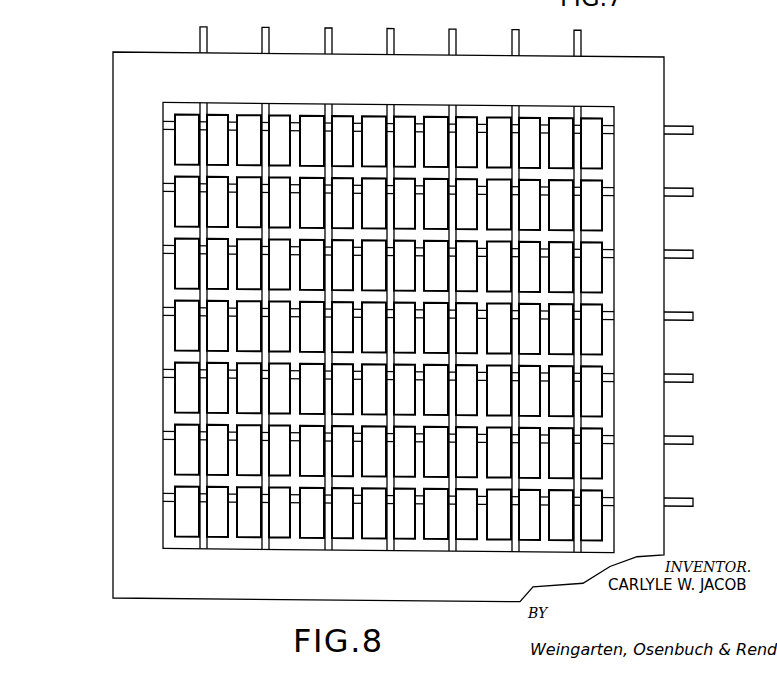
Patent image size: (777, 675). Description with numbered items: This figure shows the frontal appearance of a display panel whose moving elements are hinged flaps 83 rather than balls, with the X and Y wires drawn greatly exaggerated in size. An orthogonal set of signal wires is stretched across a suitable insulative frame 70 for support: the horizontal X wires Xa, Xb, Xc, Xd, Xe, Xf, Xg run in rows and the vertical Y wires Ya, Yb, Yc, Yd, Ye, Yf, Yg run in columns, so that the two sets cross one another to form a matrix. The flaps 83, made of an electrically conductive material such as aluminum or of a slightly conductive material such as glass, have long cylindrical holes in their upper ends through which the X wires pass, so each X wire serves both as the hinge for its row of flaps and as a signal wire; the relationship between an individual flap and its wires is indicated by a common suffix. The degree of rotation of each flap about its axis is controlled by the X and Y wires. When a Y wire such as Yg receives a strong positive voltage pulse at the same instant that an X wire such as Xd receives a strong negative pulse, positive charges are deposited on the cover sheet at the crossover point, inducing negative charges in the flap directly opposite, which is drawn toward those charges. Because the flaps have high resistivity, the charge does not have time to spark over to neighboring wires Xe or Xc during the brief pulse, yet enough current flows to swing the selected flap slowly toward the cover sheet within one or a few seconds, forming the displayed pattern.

The insulative frame 70 is at (127, 98).
The hinged flaps 83 is at (193, 317).
The Y signal wire Ya is at (214, 274).
The Y signal wire Yb is at (276, 274).
The Y signal wire Yc is at (338, 275).
The Y signal wire Yd is at (401, 275).
The Y signal wire Ye is at (463, 276).
The Y signal wire Yf is at (524, 277).
The Y signal wire Yg is at (592, 277).
The X signal wire Xa is at (443, 127).
The X signal wire Xb is at (443, 189).
The X signal wire Xc is at (442, 251).
The X signal wire Xd is at (443, 313).
The X signal wire Xe is at (443, 375).
The X signal wire Xf is at (441, 437).
The X signal wire Xg is at (443, 499).